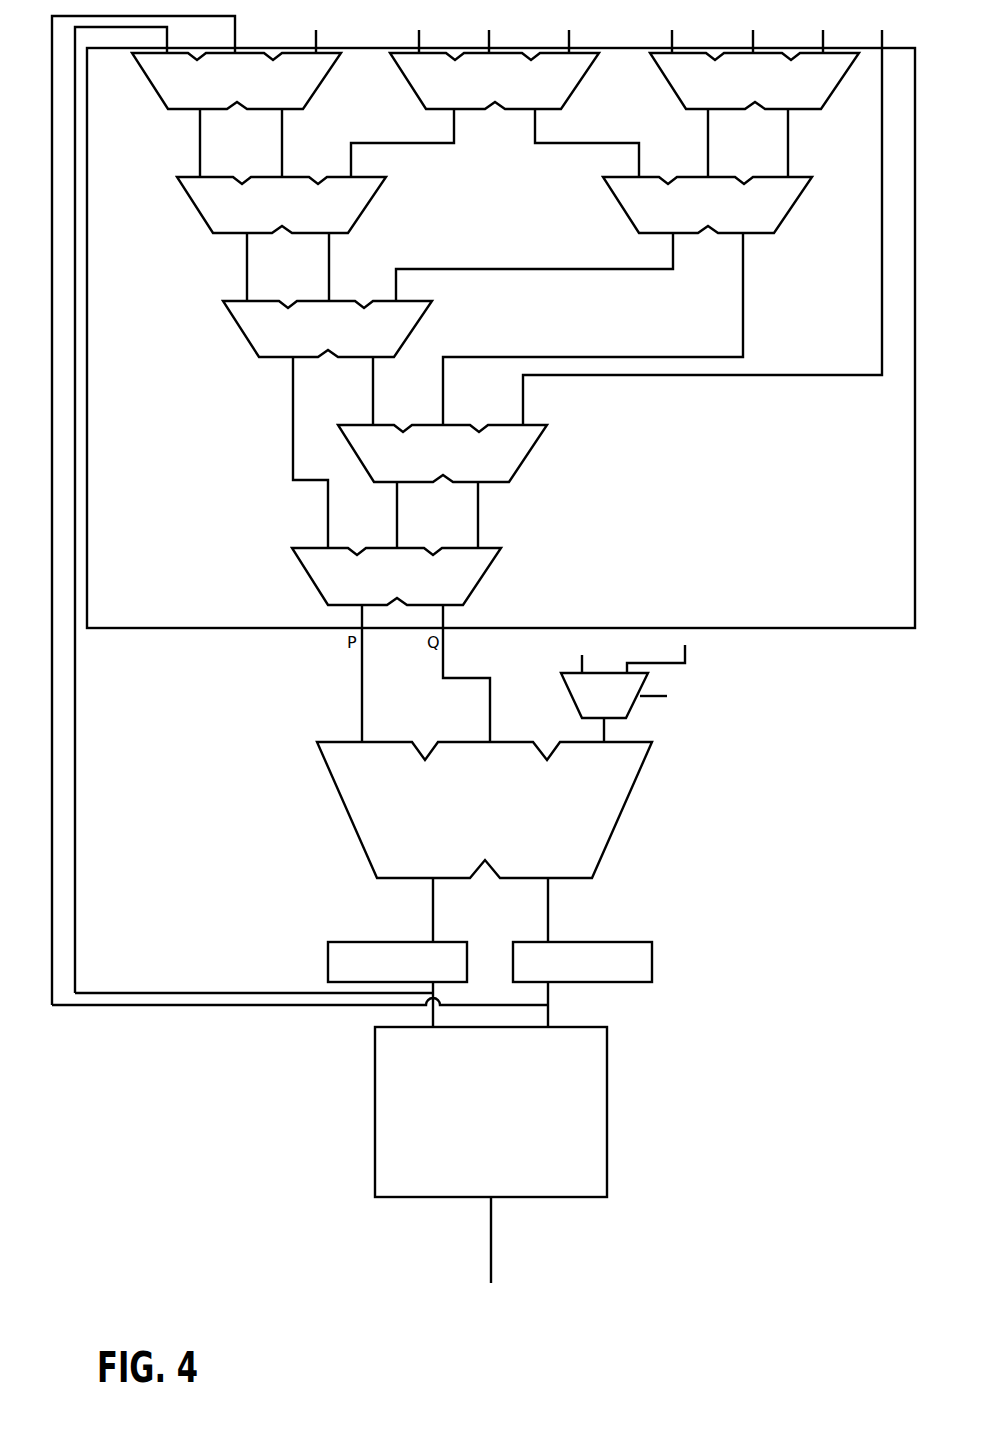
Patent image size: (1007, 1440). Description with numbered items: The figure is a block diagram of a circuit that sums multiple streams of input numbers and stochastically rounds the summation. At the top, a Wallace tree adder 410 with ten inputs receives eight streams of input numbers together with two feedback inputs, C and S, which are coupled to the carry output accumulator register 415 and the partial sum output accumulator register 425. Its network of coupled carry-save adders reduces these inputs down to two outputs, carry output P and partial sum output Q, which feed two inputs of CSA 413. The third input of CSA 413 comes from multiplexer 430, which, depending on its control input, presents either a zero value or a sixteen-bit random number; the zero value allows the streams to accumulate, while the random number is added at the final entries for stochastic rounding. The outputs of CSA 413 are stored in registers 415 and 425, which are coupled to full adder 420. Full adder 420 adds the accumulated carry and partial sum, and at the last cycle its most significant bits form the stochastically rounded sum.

The Wallace tree adder 410 is at (483, 509).
The multiplexer 430 is at (675, 689).
The CSA 413 is at (484, 842).
The carry output accumulator register 415 is at (397, 984).
The partial sum output accumulator register 425 is at (582, 984).
The full adder 420 is at (491, 1155).